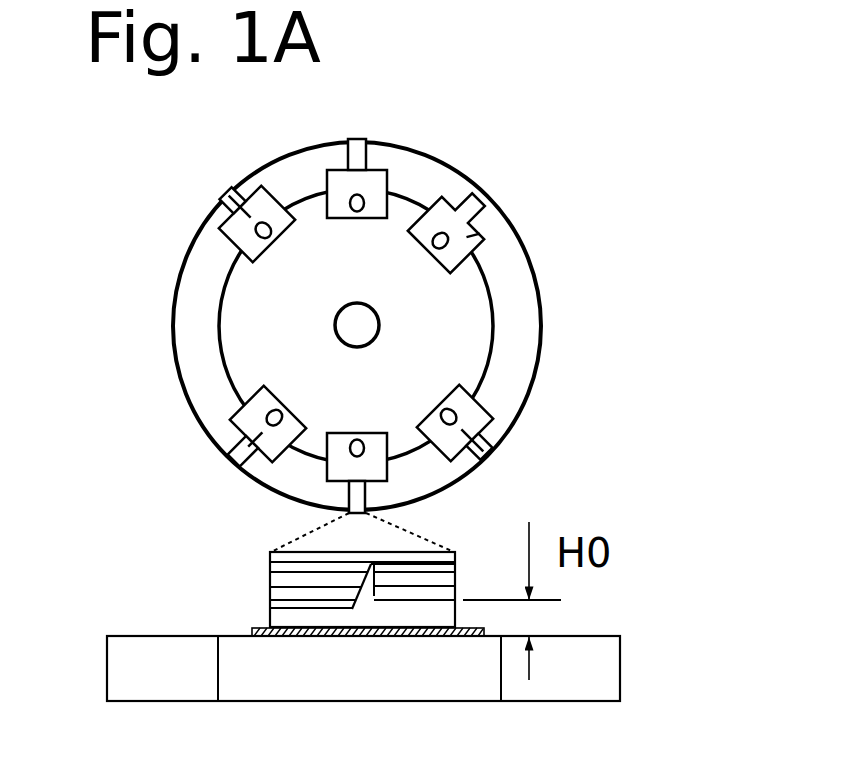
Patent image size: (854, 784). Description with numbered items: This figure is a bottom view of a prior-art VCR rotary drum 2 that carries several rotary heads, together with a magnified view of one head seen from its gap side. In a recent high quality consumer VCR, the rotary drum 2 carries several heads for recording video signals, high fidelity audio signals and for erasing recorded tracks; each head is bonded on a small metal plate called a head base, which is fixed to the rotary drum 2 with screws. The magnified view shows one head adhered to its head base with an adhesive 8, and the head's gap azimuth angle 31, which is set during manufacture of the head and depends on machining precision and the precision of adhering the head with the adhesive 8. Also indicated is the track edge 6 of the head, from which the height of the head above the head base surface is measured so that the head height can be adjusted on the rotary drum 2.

The rotary drum 2 is at (255, 325).
The gap azimuth angle 31 is at (377, 580).
The adhesive 8 is at (250, 628).
The track edge 6 is at (373, 633).